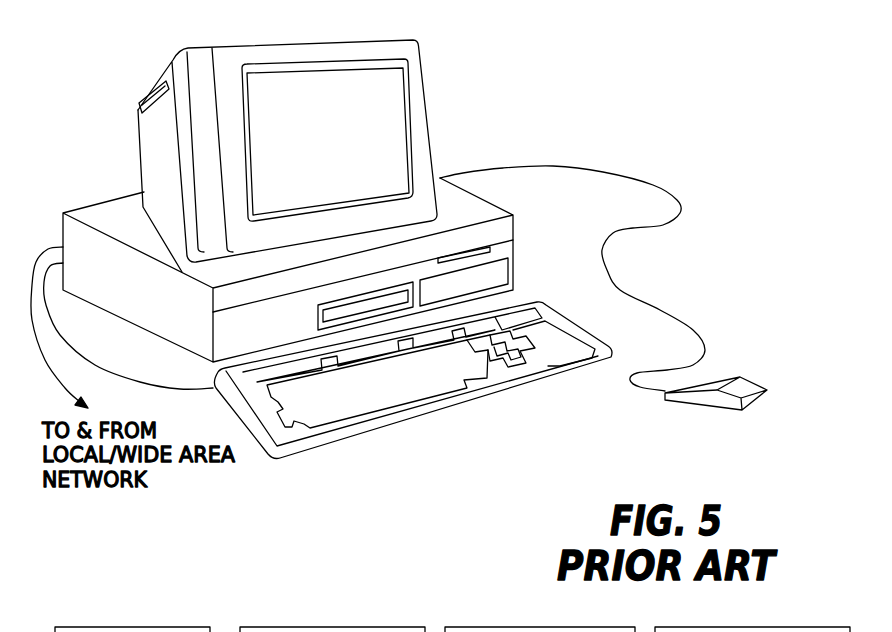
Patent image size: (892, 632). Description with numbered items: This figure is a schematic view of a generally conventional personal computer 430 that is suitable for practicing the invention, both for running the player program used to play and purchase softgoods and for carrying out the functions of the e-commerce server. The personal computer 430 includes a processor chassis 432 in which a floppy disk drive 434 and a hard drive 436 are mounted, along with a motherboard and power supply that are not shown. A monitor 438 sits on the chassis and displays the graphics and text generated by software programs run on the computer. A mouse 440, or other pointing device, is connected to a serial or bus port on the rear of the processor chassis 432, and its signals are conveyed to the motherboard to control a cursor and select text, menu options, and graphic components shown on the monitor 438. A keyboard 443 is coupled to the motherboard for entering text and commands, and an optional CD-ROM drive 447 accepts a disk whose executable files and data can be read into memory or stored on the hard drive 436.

The personal computer 430 is at (428, 442).
The processor chassis 432 is at (498, 250).
The floppy disk drive 434 is at (467, 252).
The hard drive 436 is at (486, 277).
The monitor 438 is at (427, 99).
The mouse 440 is at (742, 410).
The keyboard 443 is at (508, 396).
The compact disk-read only memory (CD-ROM) drive 447 is at (317, 320).